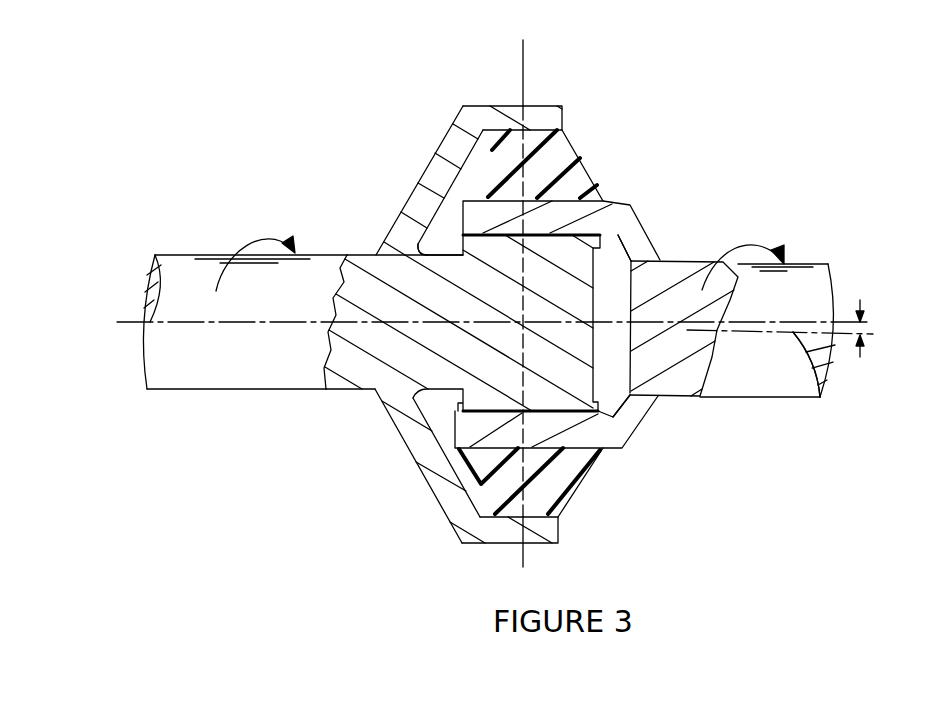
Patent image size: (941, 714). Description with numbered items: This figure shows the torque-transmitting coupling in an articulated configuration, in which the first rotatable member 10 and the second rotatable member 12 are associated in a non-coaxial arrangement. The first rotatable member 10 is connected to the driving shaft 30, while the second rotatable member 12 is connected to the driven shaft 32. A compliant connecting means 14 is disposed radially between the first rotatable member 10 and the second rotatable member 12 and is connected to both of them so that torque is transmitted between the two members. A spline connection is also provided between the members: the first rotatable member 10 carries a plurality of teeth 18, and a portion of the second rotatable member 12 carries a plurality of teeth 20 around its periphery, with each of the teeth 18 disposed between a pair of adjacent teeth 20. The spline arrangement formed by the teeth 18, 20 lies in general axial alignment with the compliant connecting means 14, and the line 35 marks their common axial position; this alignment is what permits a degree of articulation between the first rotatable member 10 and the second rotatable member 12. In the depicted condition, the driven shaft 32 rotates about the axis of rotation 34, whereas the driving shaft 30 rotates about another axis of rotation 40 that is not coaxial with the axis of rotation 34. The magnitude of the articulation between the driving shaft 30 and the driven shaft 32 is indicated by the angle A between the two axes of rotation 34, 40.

The first rotatable member 10 is at (473, 213).
The second rotatable member 12 is at (552, 124).
The compliant connecting means 14 is at (572, 173).
The teeth 18 is at (627, 233).
The teeth 20 is at (415, 248).
The drive shaft 30 is at (800, 275).
The driven shaft 32 is at (185, 267).
The axis of rotation 34 is at (132, 320).
The line 35 is at (522, 553).
The axis of rotation 40 is at (808, 347).
The angle A is at (872, 333).